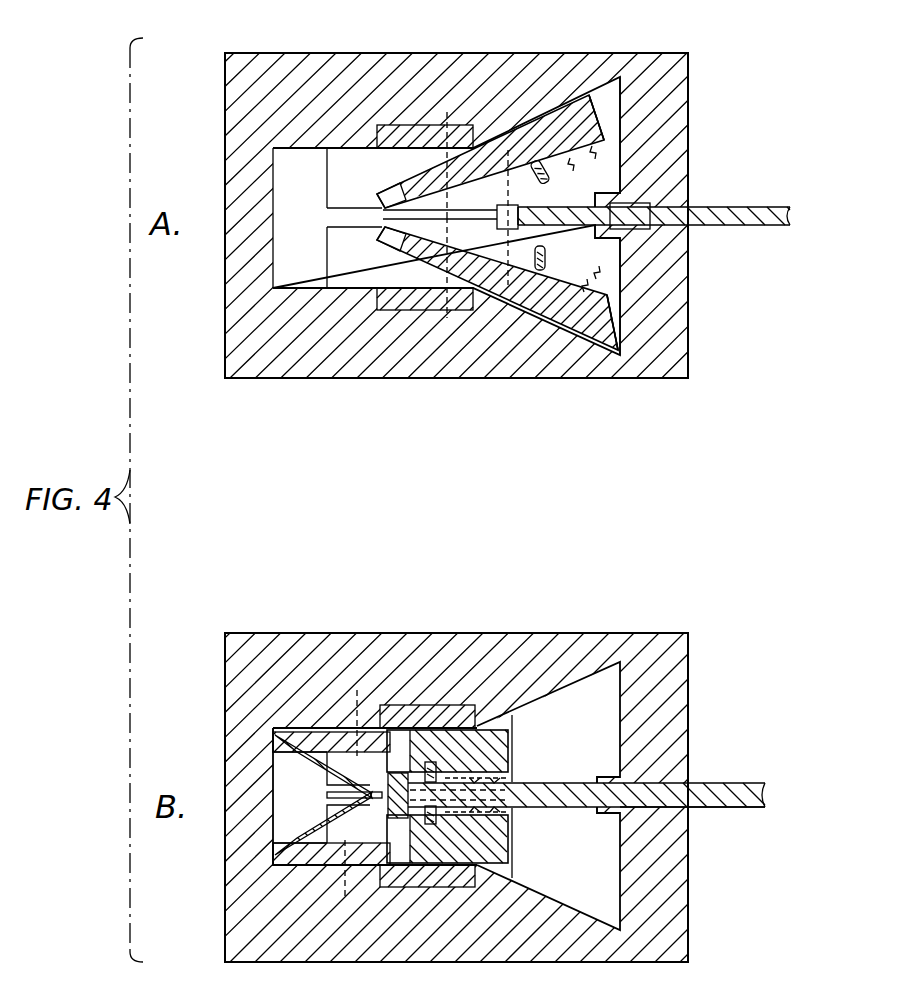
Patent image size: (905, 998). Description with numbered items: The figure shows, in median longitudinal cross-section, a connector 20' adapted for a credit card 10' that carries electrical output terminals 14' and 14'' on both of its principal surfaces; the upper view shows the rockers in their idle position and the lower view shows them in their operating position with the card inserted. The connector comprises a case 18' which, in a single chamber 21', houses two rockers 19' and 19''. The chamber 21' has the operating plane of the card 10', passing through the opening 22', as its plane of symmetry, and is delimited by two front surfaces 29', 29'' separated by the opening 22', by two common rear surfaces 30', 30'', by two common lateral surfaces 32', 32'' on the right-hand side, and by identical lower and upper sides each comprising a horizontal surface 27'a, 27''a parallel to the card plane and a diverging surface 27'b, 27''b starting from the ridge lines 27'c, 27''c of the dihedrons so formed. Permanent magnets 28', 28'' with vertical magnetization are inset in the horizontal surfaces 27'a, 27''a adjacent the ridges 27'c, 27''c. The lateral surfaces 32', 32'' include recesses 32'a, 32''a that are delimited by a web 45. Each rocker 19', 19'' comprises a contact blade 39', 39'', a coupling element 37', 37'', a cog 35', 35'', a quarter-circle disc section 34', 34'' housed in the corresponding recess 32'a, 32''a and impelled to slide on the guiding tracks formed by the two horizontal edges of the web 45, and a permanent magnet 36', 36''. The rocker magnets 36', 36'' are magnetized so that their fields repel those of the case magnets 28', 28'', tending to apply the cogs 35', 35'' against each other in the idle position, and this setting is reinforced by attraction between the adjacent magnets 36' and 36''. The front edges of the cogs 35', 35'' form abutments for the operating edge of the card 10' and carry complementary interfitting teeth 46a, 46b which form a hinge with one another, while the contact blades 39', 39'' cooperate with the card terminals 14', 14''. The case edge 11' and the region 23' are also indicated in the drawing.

In FIG. 4A, the credit card 10' is at (654, 230).
In FIG. 4B, the credit card 10' is at (587, 802).
In FIG. 4B, the rod surface 11' is at (692, 836).
In FIG. 4B, the electrical output terminals 14' is at (496, 761).
In FIG. 4B, the electrical output terminals 14'' is at (499, 824).
In FIG. 4A, the case 18' is at (456, 195).
In FIG. 4B, the case 18' is at (481, 797).
In FIG. 4A, the rocker 19' is at (661, 111).
In FIG. 4B, the rocker 19' is at (255, 727).
In FIG. 4A, the rocker 19'' is at (637, 322).
In FIG. 4B, the rocker 19'' is at (256, 863).
In FIG. 4A, the connector 20' is at (492, 194).
In FIG. 4B, the connector 20' is at (488, 768).
In FIG. 4B, the chamber 21' is at (605, 796).
In FIG. 4B, the opening 22' is at (669, 780).
In FIG. 4A, the housing body 23' is at (501, 373).
In FIG. 4A, the horizontal surface 27'a is at (351, 136).
In FIG. 4A, the horizontal surface 27''a is at (353, 285).
In FIG. 4A, the diverging surface 27'b is at (608, 76).
In FIG. 4A, the diverging surface 27''b is at (628, 355).
In FIG. 4A, the ridge line 27'c is at (491, 138).
In FIG. 4A, the ridge line 27''c is at (498, 294).
In FIG. 4A, the permanent magnet 28' is at (417, 106).
In FIG. 4B, the permanent magnet 28' is at (419, 691).
In FIG. 4A, the permanent magnet 28'' is at (417, 320).
In FIG. 4B, the permanent magnet 28'' is at (419, 894).
In FIG. 4A, the front surface 29' is at (679, 135).
In FIG. 4A, the front surface 29'' is at (681, 296).
In FIG. 4A, the rear surface 30' is at (286, 193).
In FIG. 4A, the rear surface 30'' is at (286, 248).
In FIG. 4A, the lateral surface 32' is at (235, 182).
In FIG. 4A, the lateral surface 32'' is at (231, 260).
In FIG. 4A, the recess 32'a is at (306, 158).
In FIG. 4A, the recess 32''a is at (294, 273).
In FIG. 4A, the disc section 34' is at (442, 152).
In FIG. 4B, the disc section 34' is at (364, 711).
In FIG. 4A, the disc section 34'' is at (450, 279).
In FIG. 4B, the disc section 34'' is at (352, 882).
In FIG. 4B, the cog 35' is at (280, 766).
In FIG. 4B, the cog 35'' is at (281, 823).
In FIG. 4B, the permanent magnet 36' is at (331, 714).
In FIG. 4B, the permanent magnet 36'' is at (325, 880).
In FIG. 4A, the coupling element 37' is at (547, 125).
In FIG. 4B, the coupling element 37' is at (447, 756).
In FIG. 4A, the coupling element 37'' is at (544, 303).
In FIG. 4B, the coupling element 37'' is at (447, 834).
In FIG. 4A, the contact blade 39' is at (617, 160).
In FIG. 4A, the contact blade 39'' is at (630, 273).
In FIG. 4A, the web 45 is at (335, 217).
In FIG. 4B, the web 45 is at (345, 795).
In FIG. 4A, the interfitting tooth 46a is at (518, 196).
In FIG. 4A, the interfitting tooth 46b is at (518, 240).